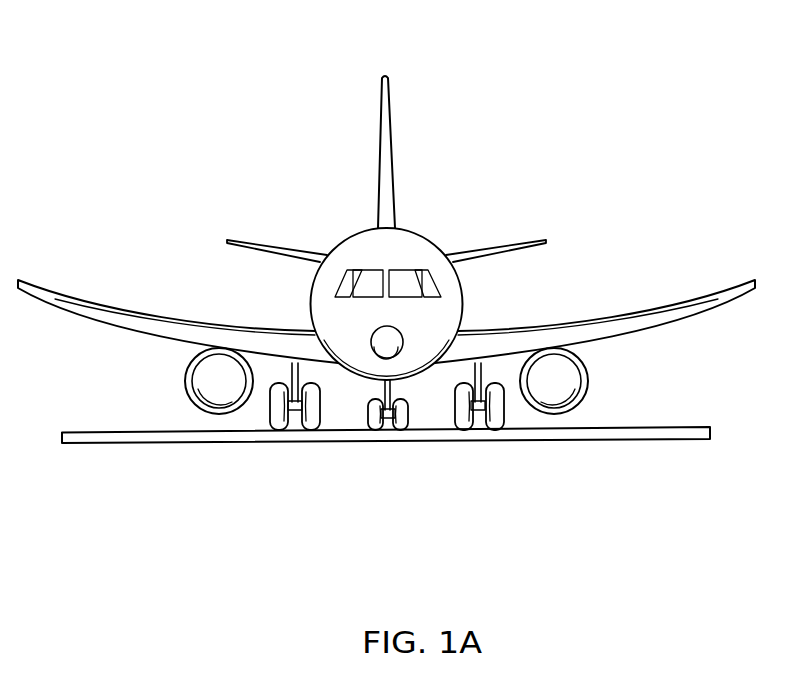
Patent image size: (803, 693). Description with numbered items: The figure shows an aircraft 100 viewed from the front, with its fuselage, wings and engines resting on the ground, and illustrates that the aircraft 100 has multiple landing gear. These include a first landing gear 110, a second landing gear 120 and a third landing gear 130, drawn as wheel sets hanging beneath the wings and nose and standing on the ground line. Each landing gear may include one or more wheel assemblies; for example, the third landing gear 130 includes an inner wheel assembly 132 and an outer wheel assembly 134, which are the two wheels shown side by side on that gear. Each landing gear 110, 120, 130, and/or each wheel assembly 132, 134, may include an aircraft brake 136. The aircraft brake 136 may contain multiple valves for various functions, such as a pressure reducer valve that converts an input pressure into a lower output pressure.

The aircraft 100 is at (386, 282).
The first landing gear 110 is at (507, 418).
The second landing gear 120 is at (407, 424).
The third landing gear 130 is at (289, 456).
The inner wheel assembly 132 is at (309, 424).
The outer wheel assembly 134 is at (281, 425).
The aircraft brake 136 is at (299, 432).